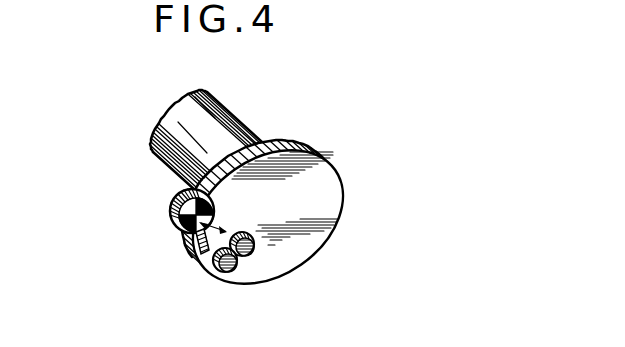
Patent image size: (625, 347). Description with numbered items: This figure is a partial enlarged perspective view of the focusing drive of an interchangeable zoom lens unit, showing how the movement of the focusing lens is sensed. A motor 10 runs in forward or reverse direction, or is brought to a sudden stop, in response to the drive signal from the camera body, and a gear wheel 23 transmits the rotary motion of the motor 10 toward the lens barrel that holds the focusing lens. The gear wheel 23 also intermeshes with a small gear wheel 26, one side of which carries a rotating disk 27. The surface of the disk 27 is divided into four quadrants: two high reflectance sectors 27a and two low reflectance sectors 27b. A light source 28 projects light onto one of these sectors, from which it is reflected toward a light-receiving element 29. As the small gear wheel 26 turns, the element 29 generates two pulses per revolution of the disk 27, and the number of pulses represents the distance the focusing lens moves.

The motor 10 is at (246, 127).
The gear wheel 23 is at (323, 162).
The small gear wheel 26 is at (173, 195).
The rotating disk 27 is at (185, 235).
The high reflectance sector 27a is at (194, 252).
The low reflectance sector 27b is at (172, 232).
The light source 28 is at (253, 250).
The light-receiving element 29 is at (236, 271).